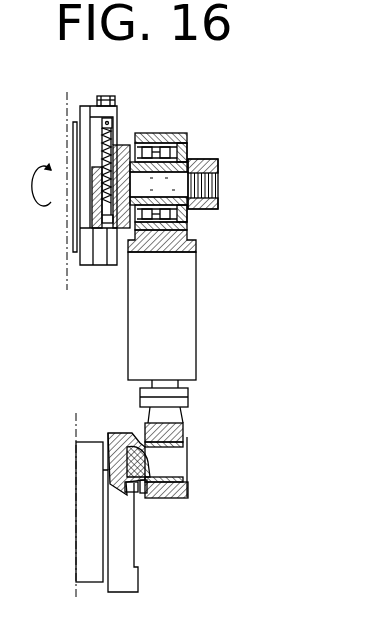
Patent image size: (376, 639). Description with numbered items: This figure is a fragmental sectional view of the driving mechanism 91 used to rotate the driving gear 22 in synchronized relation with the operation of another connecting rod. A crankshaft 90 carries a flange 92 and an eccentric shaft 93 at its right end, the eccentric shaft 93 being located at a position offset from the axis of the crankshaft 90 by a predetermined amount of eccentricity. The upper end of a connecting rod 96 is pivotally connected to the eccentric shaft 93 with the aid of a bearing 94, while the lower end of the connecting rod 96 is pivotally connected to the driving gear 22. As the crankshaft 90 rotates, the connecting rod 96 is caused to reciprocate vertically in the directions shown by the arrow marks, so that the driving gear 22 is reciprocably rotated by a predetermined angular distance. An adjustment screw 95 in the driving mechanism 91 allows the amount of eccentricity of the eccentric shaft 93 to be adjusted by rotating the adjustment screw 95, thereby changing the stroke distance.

The driving gear 22 is at (85, 488).
The crankshaft 90 is at (71, 162).
The driving mechanism 91 is at (199, 149).
The flange 92 is at (85, 107).
The eccentric shaft 93 is at (210, 161).
The bearing 94 is at (168, 130).
The adjustment screw 95 is at (107, 97).
The connecting rod 96 is at (188, 305).